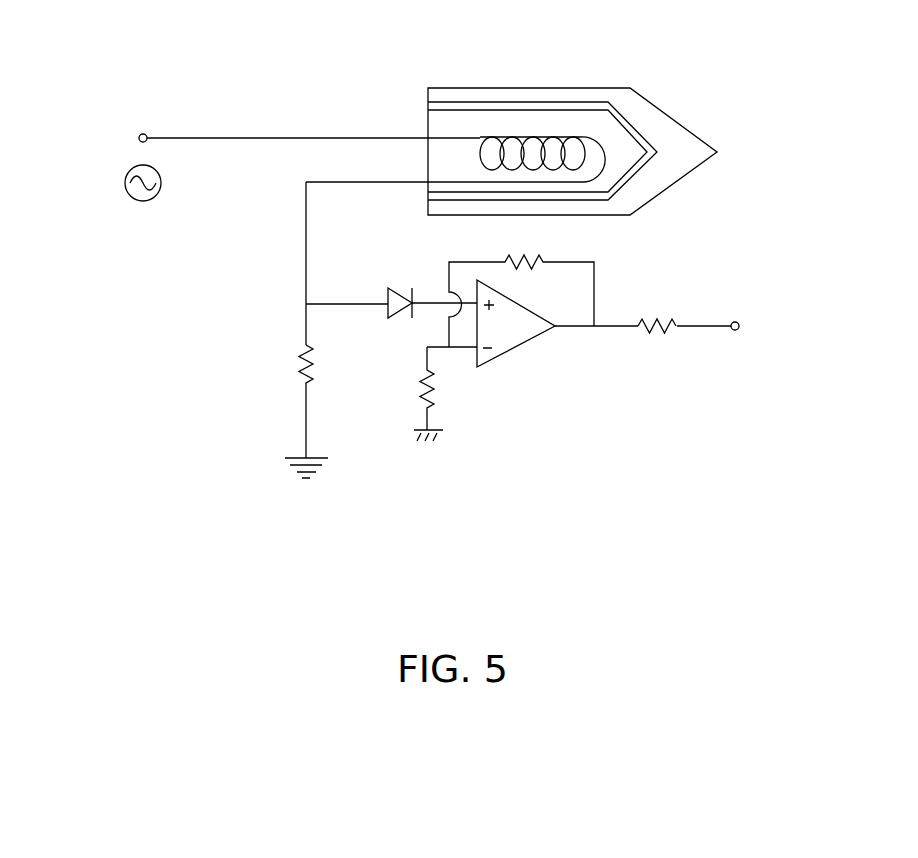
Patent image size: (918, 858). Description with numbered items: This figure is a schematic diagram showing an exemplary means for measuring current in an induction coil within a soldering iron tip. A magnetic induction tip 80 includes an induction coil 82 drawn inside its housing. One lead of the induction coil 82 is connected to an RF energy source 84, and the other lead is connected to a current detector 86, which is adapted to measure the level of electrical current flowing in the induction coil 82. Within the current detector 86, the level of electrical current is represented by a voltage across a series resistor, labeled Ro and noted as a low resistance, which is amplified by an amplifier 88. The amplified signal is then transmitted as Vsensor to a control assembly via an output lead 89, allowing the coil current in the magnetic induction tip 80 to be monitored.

The magnetic induction tip 80 is at (588, 88).
The induction coil 82 is at (472, 137).
The RF energy source 84 is at (90, 133).
The current detector 86 is at (426, 384).
The amplifier 88 is at (513, 352).
The output lead 89 is at (705, 327).